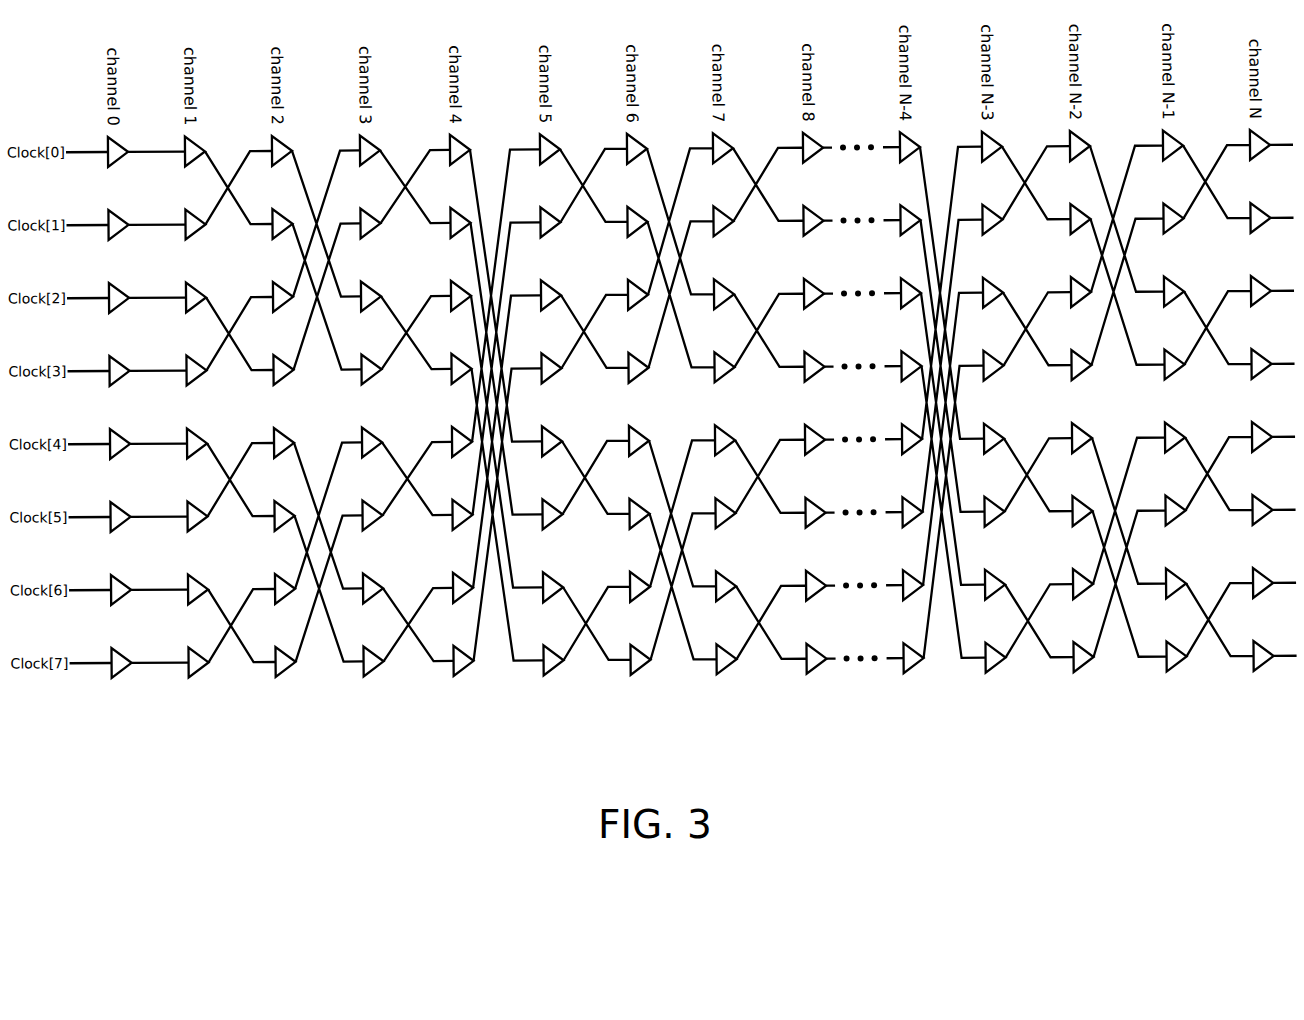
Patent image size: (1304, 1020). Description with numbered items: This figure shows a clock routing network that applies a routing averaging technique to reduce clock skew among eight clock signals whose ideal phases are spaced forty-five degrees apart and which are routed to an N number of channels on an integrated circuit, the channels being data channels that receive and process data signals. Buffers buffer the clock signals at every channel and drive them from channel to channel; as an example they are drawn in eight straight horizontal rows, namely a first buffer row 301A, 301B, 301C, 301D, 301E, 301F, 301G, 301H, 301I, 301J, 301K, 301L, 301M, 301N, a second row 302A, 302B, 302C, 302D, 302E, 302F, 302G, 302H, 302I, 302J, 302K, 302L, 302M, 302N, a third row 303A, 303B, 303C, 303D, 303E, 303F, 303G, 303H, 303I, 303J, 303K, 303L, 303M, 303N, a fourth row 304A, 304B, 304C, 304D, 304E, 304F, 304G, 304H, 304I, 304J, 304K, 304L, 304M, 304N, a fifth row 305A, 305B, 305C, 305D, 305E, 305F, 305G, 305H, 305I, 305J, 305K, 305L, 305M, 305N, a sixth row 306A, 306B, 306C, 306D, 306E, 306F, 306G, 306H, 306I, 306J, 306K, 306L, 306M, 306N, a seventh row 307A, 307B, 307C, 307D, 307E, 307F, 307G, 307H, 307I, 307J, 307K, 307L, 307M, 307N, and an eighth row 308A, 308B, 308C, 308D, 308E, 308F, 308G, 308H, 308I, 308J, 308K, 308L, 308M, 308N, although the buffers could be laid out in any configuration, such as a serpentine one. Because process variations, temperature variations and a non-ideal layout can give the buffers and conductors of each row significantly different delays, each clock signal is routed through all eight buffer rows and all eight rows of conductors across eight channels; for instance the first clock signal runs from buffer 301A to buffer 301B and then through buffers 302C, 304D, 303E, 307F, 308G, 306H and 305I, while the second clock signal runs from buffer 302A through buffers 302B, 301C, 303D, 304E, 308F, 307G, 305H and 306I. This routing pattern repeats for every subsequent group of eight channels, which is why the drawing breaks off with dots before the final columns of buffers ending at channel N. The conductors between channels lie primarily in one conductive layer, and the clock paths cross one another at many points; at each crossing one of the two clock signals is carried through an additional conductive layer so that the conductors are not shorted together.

The buffer 301A is at (102, 164).
The buffer 301B is at (178, 163).
The buffer 301C is at (269, 163).
The buffer 301D is at (357, 162).
The buffer 301E is at (447, 162).
The buffer 301F is at (537, 161).
The buffer 301G is at (624, 161).
The buffer 301H is at (710, 160).
The buffer 301I is at (802, 160).
The buffer 301J is at (900, 159).
The buffer 301K is at (989, 156).
The buffer 301L is at (1067, 156).
The buffer 301M is at (1161, 155).
The buffer 301N is at (1258, 155).
The buffer 302A is at (102, 237).
The buffer 302B is at (178, 236).
The buffer 302C is at (269, 236).
The buffer 302D is at (358, 235).
The buffer 302E is at (448, 235).
The buffer 302F is at (537, 234).
The buffer 302G is at (625, 234).
The buffer 302H is at (711, 233).
The buffer 302I is at (803, 233).
The buffer 302J is at (901, 232).
The buffer 302K is at (990, 229).
The buffer 302L is at (1067, 229).
The buffer 302M is at (1162, 228).
The buffer 302N is at (1259, 228).
The buffer 303A is at (103, 310).
The buffer 303B is at (179, 309).
The buffer 303C is at (270, 309).
The buffer 303D is at (358, 308).
The buffer 303E is at (448, 308).
The buffer 303F is at (538, 307).
The buffer 303G is at (625, 307).
The buffer 303H is at (711, 306).
The buffer 303I is at (803, 306).
The buffer 303J is at (901, 305).
The buffer 303K is at (990, 302).
The buffer 303L is at (1068, 302).
The buffer 303M is at (1162, 301).
The buffer 303N is at (1259, 301).
The buffer 304A is at (103, 383).
The buffer 304B is at (179, 382).
The buffer 304C is at (270, 382).
The buffer 304D is at (359, 381).
The buffer 304E is at (449, 381).
The buffer 304F is at (538, 380).
The buffer 304G is at (626, 380).
The buffer 304H is at (712, 379).
The buffer 304I is at (804, 379).
The buffer 304J is at (902, 378).
The buffer 304K is at (991, 375).
The buffer 304L is at (1068, 375).
The buffer 304M is at (1163, 374).
The buffer 304N is at (1260, 374).
The buffer 305A is at (104, 456).
The buffer 305B is at (180, 455).
The buffer 305C is at (271, 455).
The buffer 305D is at (359, 454).
The buffer 305E is at (449, 454).
The buffer 305F is at (539, 453).
The buffer 305G is at (626, 453).
The buffer 305H is at (712, 452).
The buffer 305I is at (804, 452).
The buffer 305J is at (902, 451).
The buffer 305K is at (991, 448).
The buffer 305L is at (1069, 448).
The buffer 305M is at (1163, 447).
The buffer 305N is at (1260, 447).
The buffer 306A is at (104, 529).
The buffer 306B is at (180, 528).
The buffer 306C is at (271, 528).
The buffer 306D is at (360, 527).
The buffer 306E is at (450, 527).
The buffer 306F is at (539, 526).
The buffer 306G is at (627, 526).
The buffer 306H is at (713, 525).
The buffer 306I is at (805, 525).
The buffer 306J is at (903, 524).
The buffer 306K is at (992, 521).
The buffer 306L is at (1069, 521).
The buffer 306M is at (1164, 520).
The buffer 306N is at (1261, 520).
The buffer 307A is at (105, 602).
The buffer 307B is at (181, 601).
The buffer 307C is at (272, 601).
The buffer 307D is at (360, 600).
The buffer 307E is at (450, 600).
The buffer 307F is at (540, 599).
The buffer 307G is at (627, 599).
The buffer 307H is at (713, 598).
The buffer 307I is at (805, 598).
The buffer 307J is at (903, 597).
The buffer 307K is at (992, 594).
The buffer 307L is at (1070, 594).
The buffer 307M is at (1164, 593).
The buffer 307N is at (1261, 593).
The buffer 308A is at (105, 675).
The buffer 308B is at (181, 674).
The buffer 308C is at (272, 674).
The buffer 308D is at (361, 673).
The buffer 308E is at (451, 673).
The buffer 308F is at (540, 672).
The buffer 308G is at (628, 672).
The buffer 308H is at (714, 671).
The buffer 308I is at (806, 671).
The buffer 308J is at (904, 670).
The buffer 308K is at (993, 667).
The buffer 308L is at (1071, 667).
The buffer 308M is at (1165, 666).
The buffer 308N is at (1262, 666).